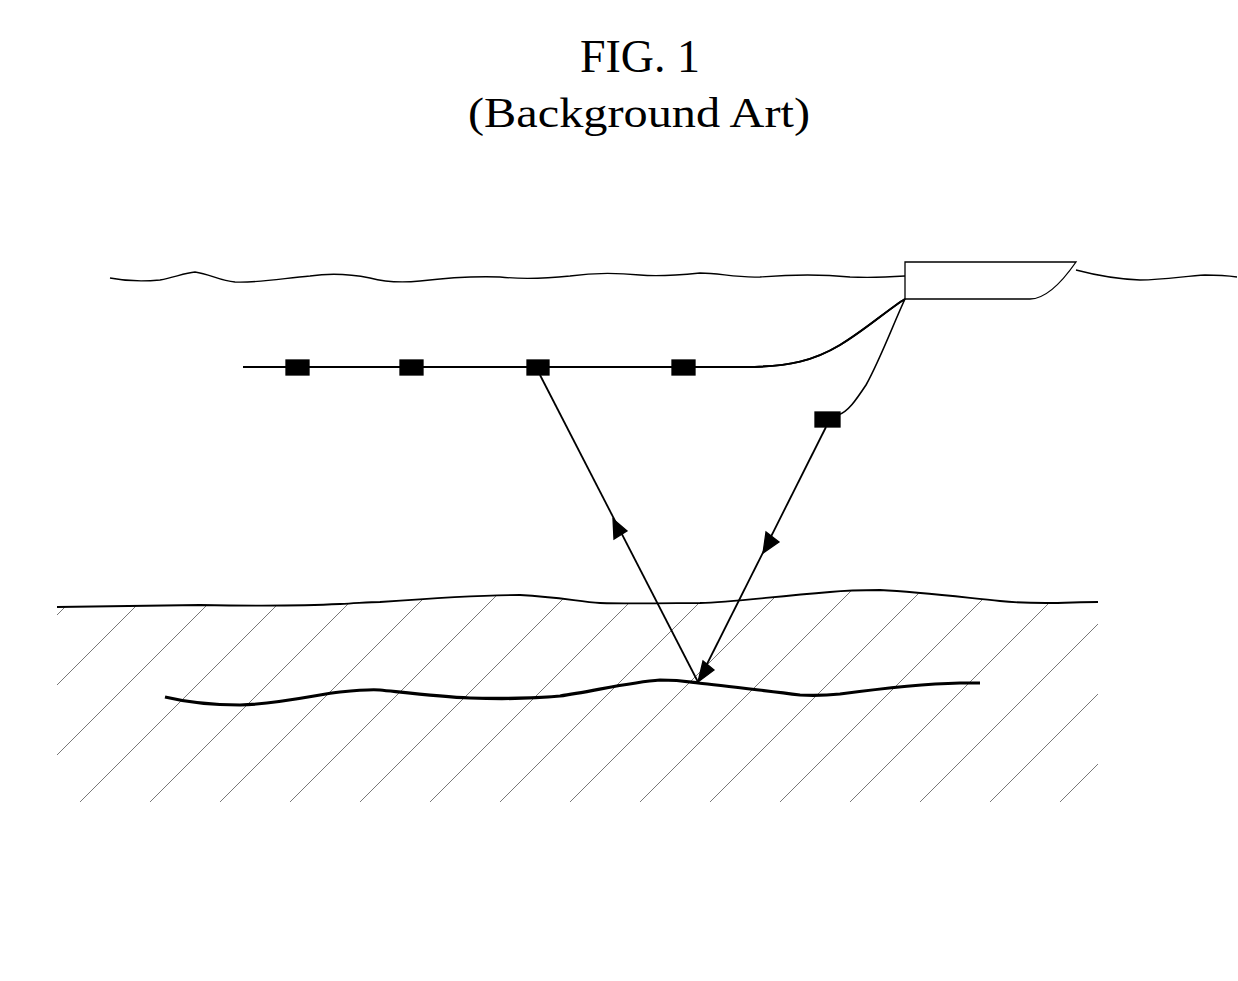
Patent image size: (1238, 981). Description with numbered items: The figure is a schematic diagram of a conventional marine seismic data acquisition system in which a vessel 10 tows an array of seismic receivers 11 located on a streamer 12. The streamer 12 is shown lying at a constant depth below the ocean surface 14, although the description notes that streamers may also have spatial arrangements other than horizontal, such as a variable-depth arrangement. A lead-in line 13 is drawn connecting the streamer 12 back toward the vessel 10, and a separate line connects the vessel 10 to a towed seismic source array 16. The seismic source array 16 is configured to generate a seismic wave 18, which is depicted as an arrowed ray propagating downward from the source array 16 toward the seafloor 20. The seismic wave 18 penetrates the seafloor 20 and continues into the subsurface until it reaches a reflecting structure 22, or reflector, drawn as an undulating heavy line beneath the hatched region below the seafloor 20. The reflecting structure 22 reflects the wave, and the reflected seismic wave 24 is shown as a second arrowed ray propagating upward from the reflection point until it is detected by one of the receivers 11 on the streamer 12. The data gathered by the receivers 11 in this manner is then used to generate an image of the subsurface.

The vessel 10 is at (1052, 234).
The seismic receivers 11 is at (296, 360).
The streamer 12 is at (610, 368).
The lead-in cable 13 is at (811, 361).
The ocean surface 14 is at (195, 272).
The seismic source array 16 is at (832, 428).
The seismic wave 18 is at (800, 480).
The seafloor 20 is at (1046, 603).
The reflecting structure 22 is at (380, 690).
The reflected seismic wave 24 is at (575, 447).